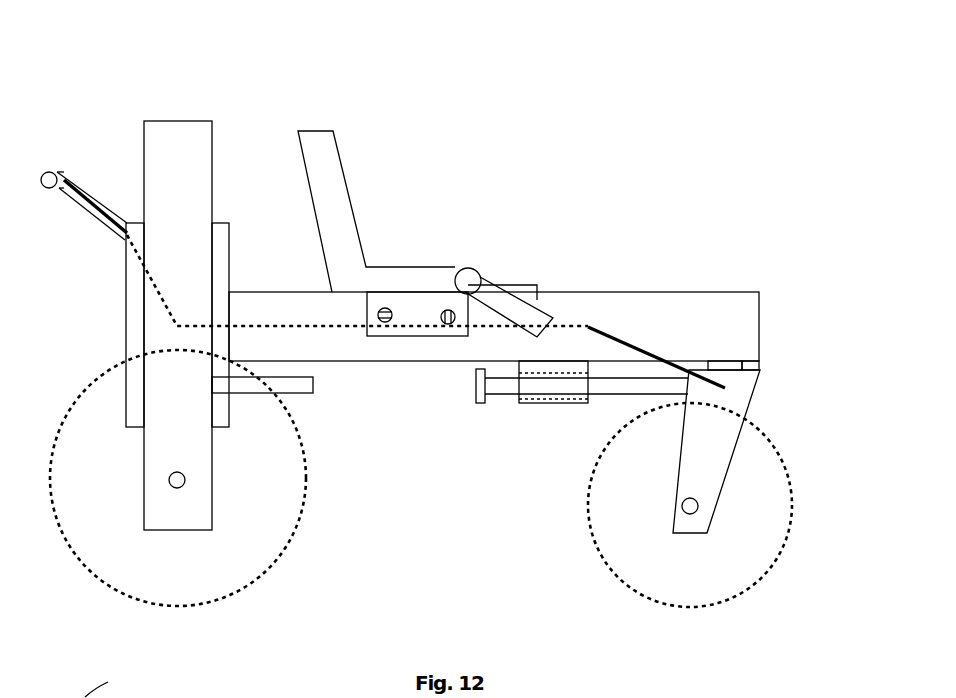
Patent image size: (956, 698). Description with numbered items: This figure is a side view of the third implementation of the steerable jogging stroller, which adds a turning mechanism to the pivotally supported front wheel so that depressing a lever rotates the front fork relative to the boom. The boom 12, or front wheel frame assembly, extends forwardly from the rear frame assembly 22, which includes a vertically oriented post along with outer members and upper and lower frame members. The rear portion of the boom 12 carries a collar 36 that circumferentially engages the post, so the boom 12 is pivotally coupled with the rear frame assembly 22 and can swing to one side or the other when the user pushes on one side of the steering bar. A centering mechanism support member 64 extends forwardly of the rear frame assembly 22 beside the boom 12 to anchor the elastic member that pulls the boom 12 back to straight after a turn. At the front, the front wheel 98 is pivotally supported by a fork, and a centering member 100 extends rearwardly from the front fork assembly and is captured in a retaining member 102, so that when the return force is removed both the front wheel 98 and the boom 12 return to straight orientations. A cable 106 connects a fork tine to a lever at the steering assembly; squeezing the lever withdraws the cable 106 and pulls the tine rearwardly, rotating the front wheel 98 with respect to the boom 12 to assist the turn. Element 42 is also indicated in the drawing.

The boom 12 is at (638, 293).
The rear frame assembly 22 is at (108, 172).
The collar 36 is at (230, 205).
The base 42 is at (85, 697).
The second support member 64 is at (316, 394).
The front wheel 98 is at (777, 413).
The centering member 100 is at (615, 397).
The retaining member 102 is at (557, 403).
The second cable 106 is at (618, 338).